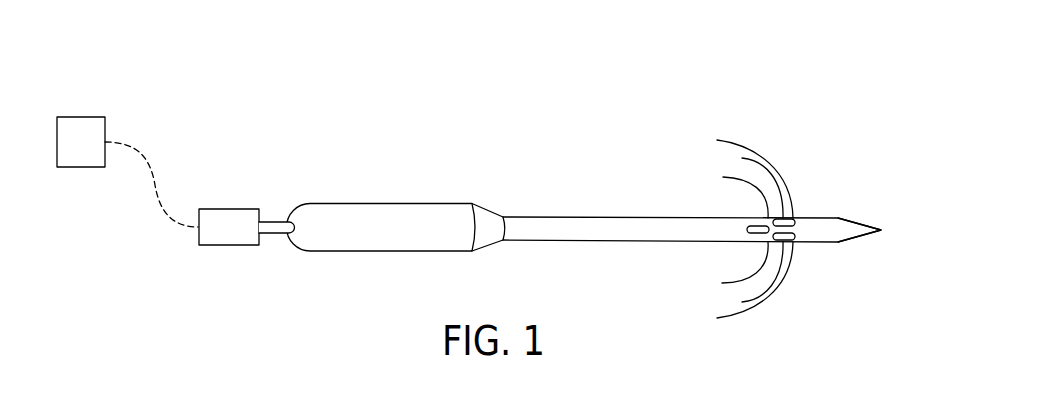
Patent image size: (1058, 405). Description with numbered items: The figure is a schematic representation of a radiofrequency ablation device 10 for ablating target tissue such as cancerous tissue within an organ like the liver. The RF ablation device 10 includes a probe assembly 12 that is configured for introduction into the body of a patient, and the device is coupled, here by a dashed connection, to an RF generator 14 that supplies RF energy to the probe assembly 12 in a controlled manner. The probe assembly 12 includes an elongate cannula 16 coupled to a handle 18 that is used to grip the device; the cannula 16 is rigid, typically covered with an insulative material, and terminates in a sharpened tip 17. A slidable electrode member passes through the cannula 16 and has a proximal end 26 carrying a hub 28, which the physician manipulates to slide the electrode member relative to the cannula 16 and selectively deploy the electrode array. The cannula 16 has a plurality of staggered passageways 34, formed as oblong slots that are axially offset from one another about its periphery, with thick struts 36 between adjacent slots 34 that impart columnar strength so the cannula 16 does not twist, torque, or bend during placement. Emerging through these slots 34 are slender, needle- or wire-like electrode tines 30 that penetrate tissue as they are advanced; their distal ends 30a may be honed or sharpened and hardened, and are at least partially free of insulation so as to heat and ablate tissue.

The RF ablation device 10 is at (422, 104).
The probe assembly 12 is at (330, 256).
The RF generator 14 is at (88, 117).
The elongate cannula 16 is at (586, 217).
The sharpened tip 17 is at (881, 230).
The handle 18 is at (426, 204).
The proximal end 26 is at (276, 229).
The hub 28 is at (220, 217).
The electrode tines 30 is at (770, 166).
The distal ends of the tines 30a is at (732, 177).
The staggered passageways 34 is at (794, 218).
The thick struts 36 is at (796, 235).